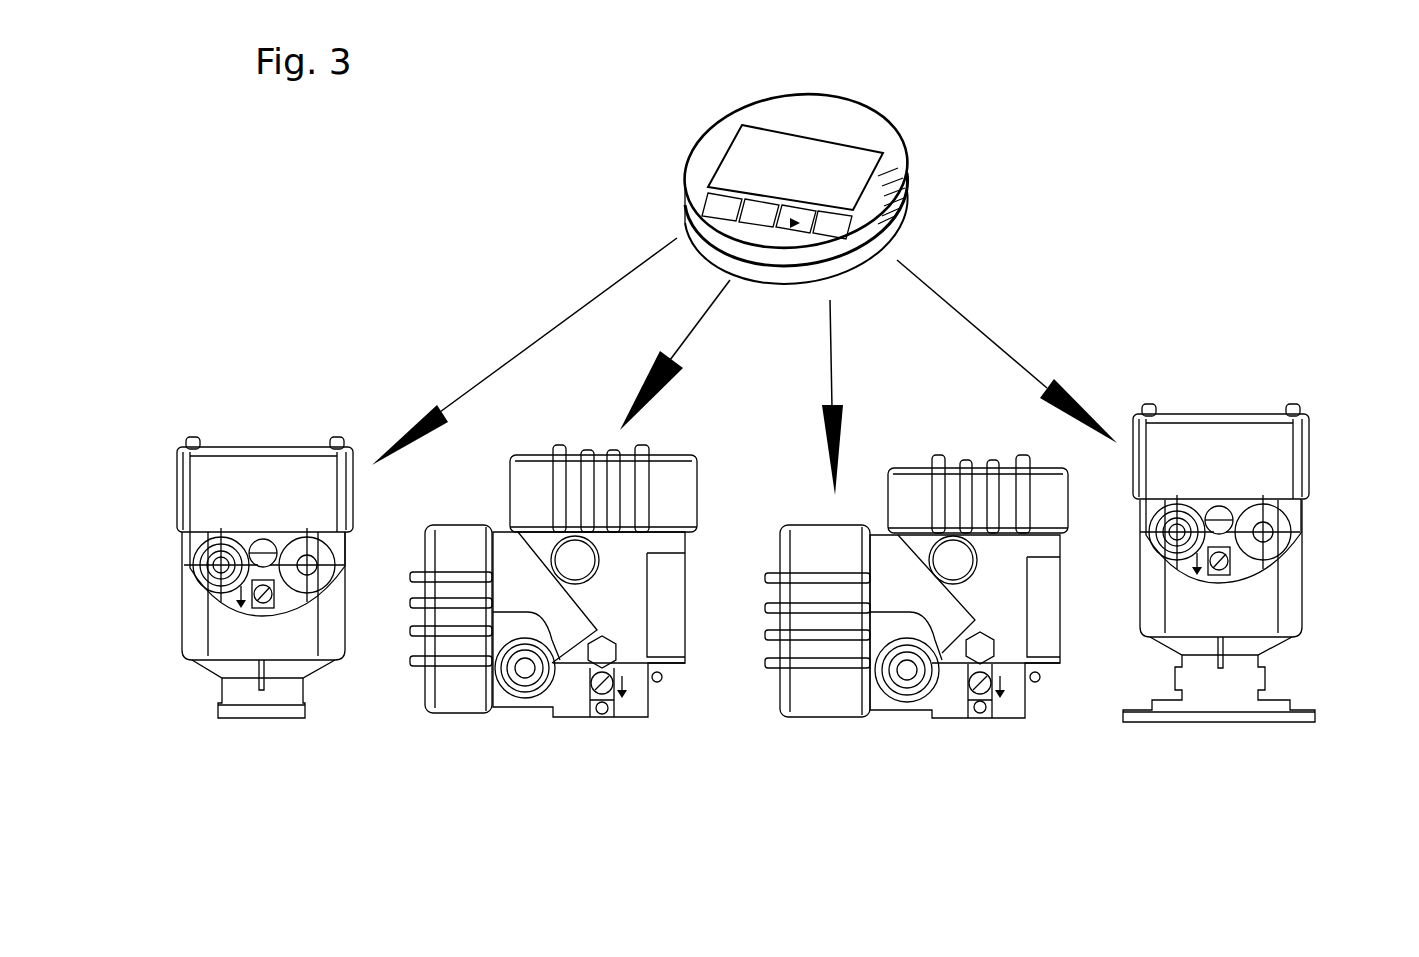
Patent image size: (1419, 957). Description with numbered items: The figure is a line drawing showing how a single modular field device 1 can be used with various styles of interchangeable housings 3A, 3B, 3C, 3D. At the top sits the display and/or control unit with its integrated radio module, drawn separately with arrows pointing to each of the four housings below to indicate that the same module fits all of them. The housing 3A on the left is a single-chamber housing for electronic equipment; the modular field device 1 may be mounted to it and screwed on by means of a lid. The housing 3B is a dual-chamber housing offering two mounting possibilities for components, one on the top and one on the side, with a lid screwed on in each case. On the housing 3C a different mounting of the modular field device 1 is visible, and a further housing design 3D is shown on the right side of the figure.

The modular field device 1 is at (752, 634).
The housing 3A is at (228, 621).
The housing 3B is at (553, 625).
The housing 3C is at (916, 597).
The housing design 3D is at (1254, 605).